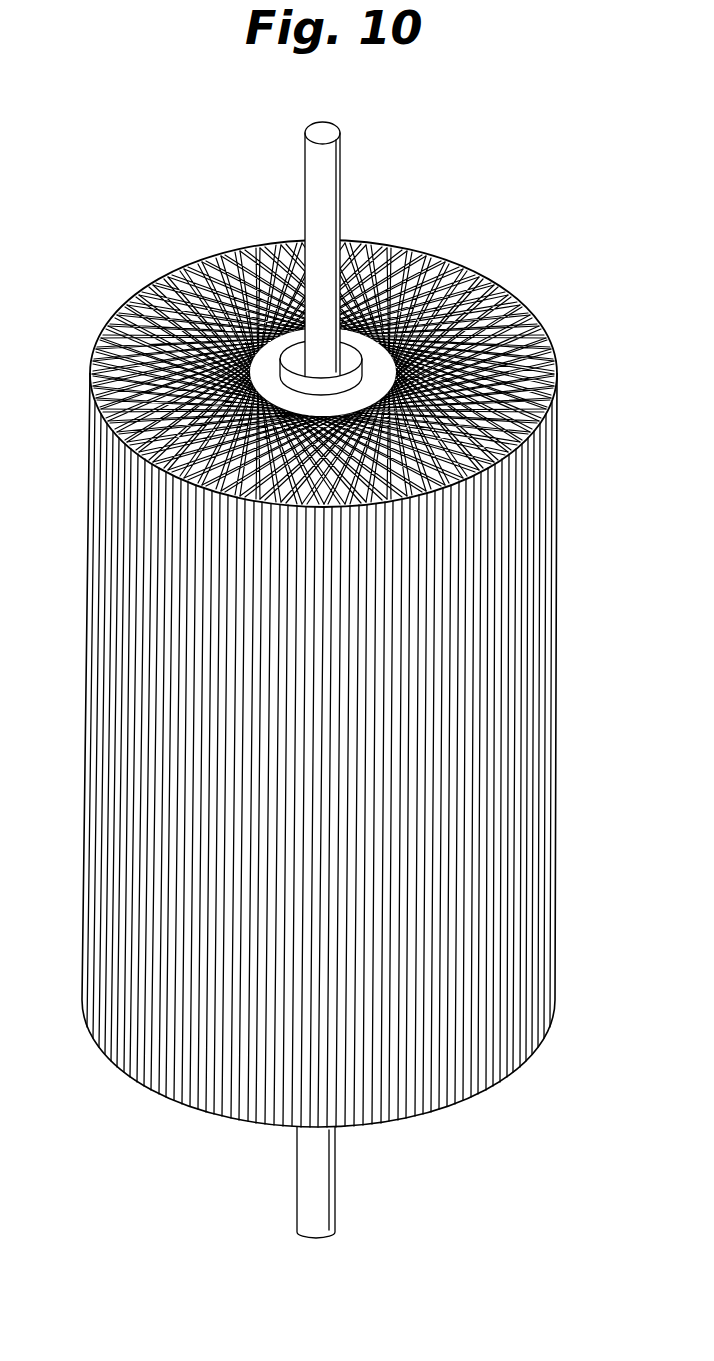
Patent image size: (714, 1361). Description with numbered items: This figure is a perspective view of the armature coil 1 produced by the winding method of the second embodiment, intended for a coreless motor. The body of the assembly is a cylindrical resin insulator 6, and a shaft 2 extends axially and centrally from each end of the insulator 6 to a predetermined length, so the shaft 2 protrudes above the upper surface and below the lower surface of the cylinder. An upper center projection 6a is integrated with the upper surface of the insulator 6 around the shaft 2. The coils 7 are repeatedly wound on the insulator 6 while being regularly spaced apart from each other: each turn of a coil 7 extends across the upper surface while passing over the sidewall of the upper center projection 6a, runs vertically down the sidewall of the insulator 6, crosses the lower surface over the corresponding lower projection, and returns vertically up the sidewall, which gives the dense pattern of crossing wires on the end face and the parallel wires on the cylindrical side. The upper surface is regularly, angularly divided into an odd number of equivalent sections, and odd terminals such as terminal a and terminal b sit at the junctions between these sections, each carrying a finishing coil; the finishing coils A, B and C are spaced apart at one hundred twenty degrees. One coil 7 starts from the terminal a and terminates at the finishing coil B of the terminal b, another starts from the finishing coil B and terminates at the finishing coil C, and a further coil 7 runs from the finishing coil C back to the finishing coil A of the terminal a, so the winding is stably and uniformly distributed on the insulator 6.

The coil winding assembly (rotor) 1 is at (323, 680).
The shaft 2 is at (332, 177).
The cylindrical resin insulator 6 is at (430, 1073).
The upper center projection 6a is at (470, 270).
The coil 7 is at (505, 720).
The terminal a is at (147, 464).
The finishing coil A is at (150, 470).
The terminal b is at (553, 350).
The finishing coil B is at (557, 410).
The finishing coil C is at (273, 243).